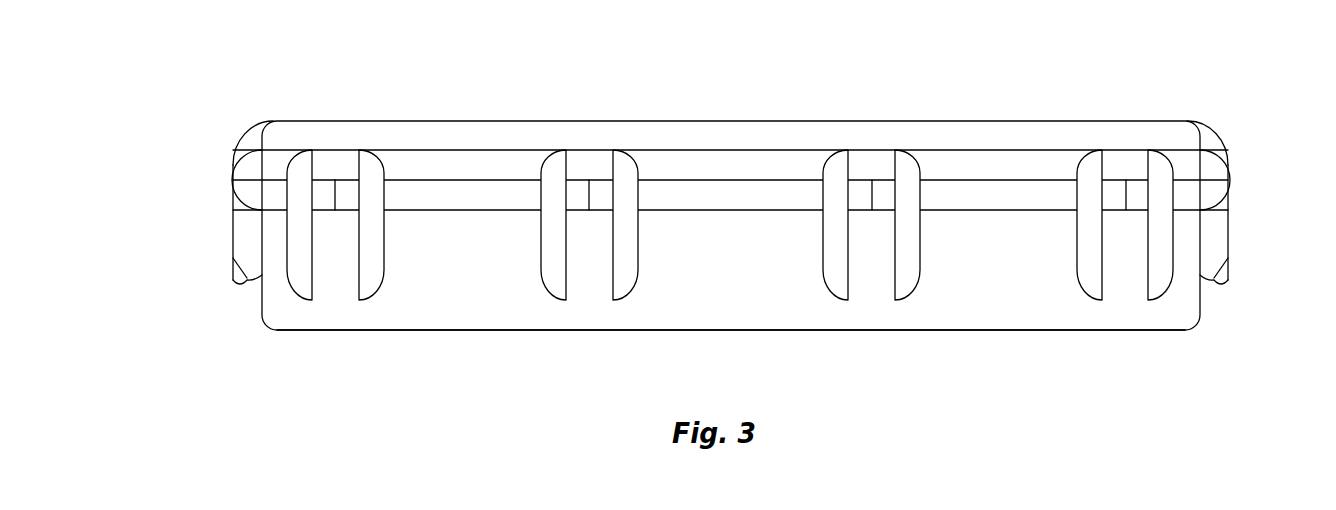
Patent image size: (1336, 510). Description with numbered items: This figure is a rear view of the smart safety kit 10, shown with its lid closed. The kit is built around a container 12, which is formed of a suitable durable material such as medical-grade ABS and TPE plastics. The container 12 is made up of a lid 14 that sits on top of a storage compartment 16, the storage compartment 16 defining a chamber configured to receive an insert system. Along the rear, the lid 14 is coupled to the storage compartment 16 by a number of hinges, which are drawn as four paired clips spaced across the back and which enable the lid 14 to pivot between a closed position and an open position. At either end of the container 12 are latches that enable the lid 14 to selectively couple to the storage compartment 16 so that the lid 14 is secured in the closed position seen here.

The smart safety kit 10 is at (1250, 101).
The container 12 is at (1033, 294).
The lid 14 is at (783, 137).
The storage compartment 16 is at (766, 296).